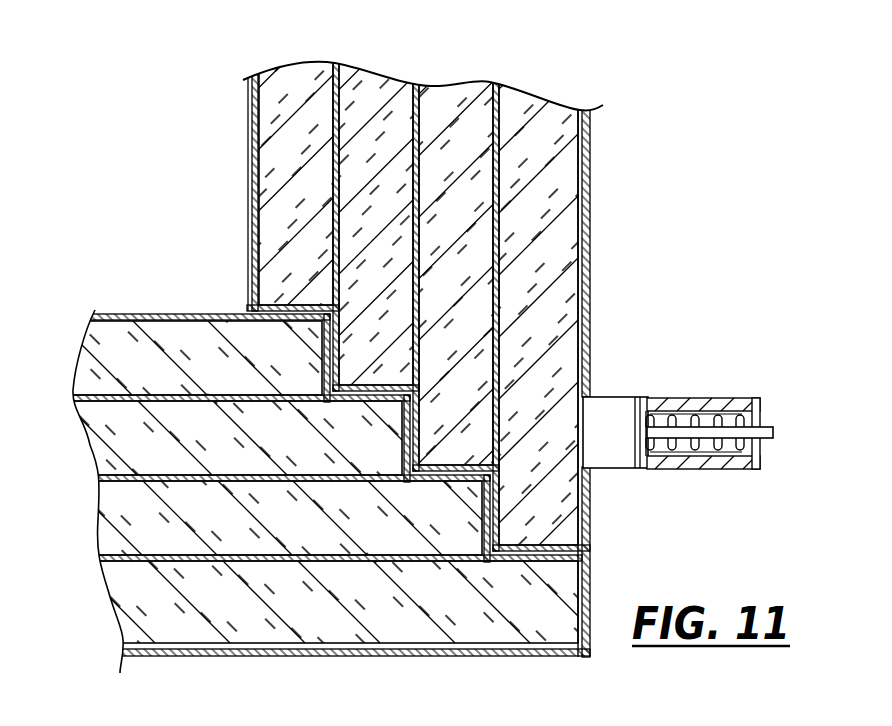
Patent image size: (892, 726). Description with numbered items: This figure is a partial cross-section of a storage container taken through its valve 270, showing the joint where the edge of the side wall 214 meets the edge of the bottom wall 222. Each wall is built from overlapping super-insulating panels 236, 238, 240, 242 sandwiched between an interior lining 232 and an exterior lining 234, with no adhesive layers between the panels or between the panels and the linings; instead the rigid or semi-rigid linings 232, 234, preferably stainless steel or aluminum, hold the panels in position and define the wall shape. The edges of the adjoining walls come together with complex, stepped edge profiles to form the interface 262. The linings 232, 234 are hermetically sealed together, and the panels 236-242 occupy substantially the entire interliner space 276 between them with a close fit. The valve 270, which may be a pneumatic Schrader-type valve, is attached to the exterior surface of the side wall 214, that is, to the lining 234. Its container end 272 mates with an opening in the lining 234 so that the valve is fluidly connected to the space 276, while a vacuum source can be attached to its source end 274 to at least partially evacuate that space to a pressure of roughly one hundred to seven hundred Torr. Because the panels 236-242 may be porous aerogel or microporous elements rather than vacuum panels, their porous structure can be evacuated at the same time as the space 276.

The side wall 214 is at (590, 136).
The bottom wall 222 is at (152, 316).
The interior lining 232 is at (250, 133).
The exterior lining 234 is at (590, 201).
The super-insulating panel 236 is at (298, 84).
The super-insulating panel 238 is at (388, 96).
The super-insulating panel 240 is at (468, 105).
The super-insulating panel 242 is at (550, 122).
The interface 262 is at (409, 389).
The valve 270 is at (734, 404).
The container end 272 is at (603, 470).
The source end 274 is at (753, 398).
The interliner space 276 is at (497, 272).